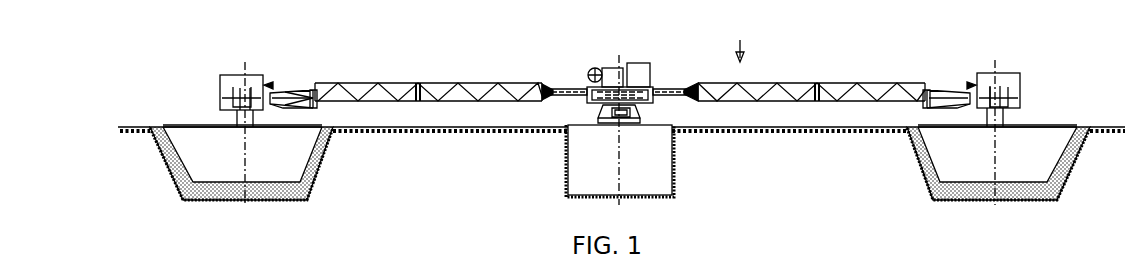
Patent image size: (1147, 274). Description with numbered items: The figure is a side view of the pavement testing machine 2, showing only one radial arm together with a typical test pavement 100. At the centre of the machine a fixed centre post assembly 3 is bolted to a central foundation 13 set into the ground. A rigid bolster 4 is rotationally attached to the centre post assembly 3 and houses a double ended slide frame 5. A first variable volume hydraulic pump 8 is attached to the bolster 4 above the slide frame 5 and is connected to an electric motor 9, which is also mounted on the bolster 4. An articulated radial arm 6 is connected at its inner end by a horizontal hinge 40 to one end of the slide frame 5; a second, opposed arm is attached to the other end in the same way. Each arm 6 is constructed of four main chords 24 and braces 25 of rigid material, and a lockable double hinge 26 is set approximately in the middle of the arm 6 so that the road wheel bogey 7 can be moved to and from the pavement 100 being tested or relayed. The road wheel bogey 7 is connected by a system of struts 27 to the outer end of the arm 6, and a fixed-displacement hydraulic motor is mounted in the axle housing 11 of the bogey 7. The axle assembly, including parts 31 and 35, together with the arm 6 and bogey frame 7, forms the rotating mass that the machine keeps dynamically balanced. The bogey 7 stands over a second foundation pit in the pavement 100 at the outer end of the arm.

The pavement 100 is at (175, 125).
The central foundation 13 is at (652, 163).
The fixed centre post assembly 3 is at (638, 118).
The rigid bolster 4 is at (652, 88).
The first variable volume hydraulic pump 8 is at (592, 68).
The electric motor 9 is at (592, 68).
The double ended slide frame 5 is at (578, 90).
The horizontal hinge 40 is at (548, 96).
The articulated radial arm 6 is at (620, 71).
The brace 25 is at (369, 93).
The main chord 24 is at (472, 83).
The lockable double hinge 26 is at (418, 83).
The axle assembly component 35 is at (283, 93).
The strut 27 is at (300, 92).
The axle housing 11 is at (285, 108).
The road wheel bogey 7 is at (237, 77).
The axle assembly component 31 is at (248, 86).
The pavement testing machine 2 is at (740, 40).